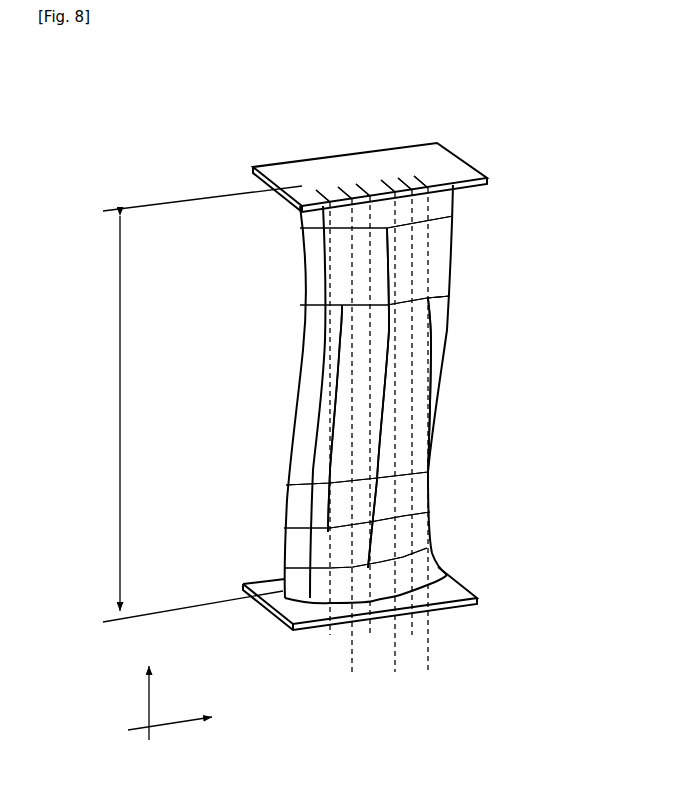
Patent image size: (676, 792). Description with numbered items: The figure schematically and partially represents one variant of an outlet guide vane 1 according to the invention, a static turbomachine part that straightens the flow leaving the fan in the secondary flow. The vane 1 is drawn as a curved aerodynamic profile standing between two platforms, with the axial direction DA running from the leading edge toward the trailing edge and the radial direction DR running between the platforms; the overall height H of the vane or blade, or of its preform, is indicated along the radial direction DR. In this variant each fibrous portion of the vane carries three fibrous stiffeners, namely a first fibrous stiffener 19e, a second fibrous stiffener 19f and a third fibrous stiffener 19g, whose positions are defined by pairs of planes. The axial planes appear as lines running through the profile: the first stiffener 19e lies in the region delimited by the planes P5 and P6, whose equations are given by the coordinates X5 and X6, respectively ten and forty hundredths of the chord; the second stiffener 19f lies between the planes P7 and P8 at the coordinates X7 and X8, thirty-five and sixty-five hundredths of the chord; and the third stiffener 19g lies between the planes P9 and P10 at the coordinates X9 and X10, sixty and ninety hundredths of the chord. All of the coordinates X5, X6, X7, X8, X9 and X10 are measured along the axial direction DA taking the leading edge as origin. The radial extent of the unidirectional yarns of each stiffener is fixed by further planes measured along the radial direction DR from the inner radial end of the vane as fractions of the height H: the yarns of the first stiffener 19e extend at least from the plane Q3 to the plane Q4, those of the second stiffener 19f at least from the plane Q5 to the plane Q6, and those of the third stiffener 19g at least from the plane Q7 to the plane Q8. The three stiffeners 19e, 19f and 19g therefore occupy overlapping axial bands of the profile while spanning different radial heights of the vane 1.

The outlet guide vane 1 is at (179, 119).
The coordinate X5 is at (321, 195).
The coordinate X6 is at (361, 189).
The coordinate X7 is at (343, 192).
The coordinate X8 is at (403, 183).
The coordinate X9 is at (386, 185).
The coordinate X10 is at (419, 181).
The plane P5 is at (330, 434).
The plane P6 is at (371, 431).
The plane P7 is at (352, 450).
The plane P8 is at (413, 428).
The plane P9 is at (395, 446).
The plane P10 is at (440, 444).
The plane Q3 is at (283, 528).
The plane Q4 is at (299, 305).
The plane Q5 is at (283, 568).
The plane Q6 is at (299, 228).
The plane Q7 is at (406, 471).
The plane Q8 is at (429, 297).
The first fibrous stiffener 19e is at (339, 350).
The second fibrous stiffener 19f is at (384, 397).
The third fibrous stiffener 19g is at (408, 429).
The height H is at (199, 404).
The radial direction DR is at (128, 694).
The axial direction DA is at (184, 731).